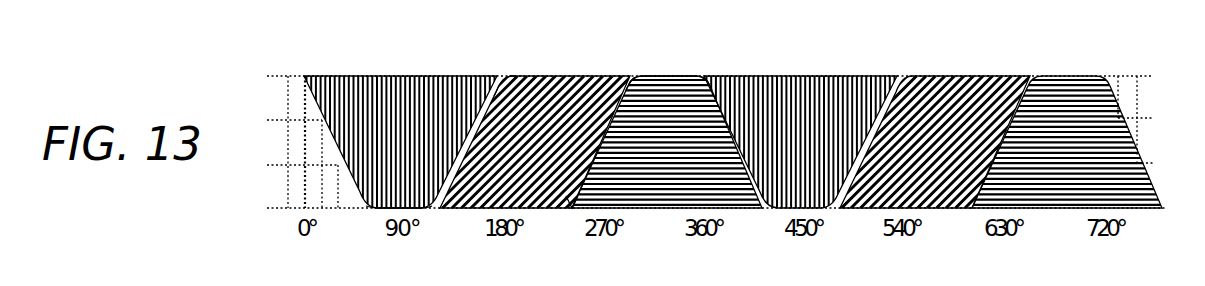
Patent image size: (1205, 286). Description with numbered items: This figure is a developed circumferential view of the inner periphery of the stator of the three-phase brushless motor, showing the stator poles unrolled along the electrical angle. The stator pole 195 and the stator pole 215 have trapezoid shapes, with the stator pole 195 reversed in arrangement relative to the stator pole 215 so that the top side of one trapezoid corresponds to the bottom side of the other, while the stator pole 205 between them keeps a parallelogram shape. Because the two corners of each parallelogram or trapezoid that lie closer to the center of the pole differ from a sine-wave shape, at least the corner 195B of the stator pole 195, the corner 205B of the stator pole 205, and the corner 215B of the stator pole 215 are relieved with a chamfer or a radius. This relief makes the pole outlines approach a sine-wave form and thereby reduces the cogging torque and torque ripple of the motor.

The stator pole 195 is at (415, 115).
The corner of stator pole 195 195B is at (362, 210).
The stator pole 205 is at (548, 118).
The corner of stator pole 205 205B is at (508, 78).
The stator pole 215 is at (663, 180).
The corner of stator pole 215 215B is at (702, 76).